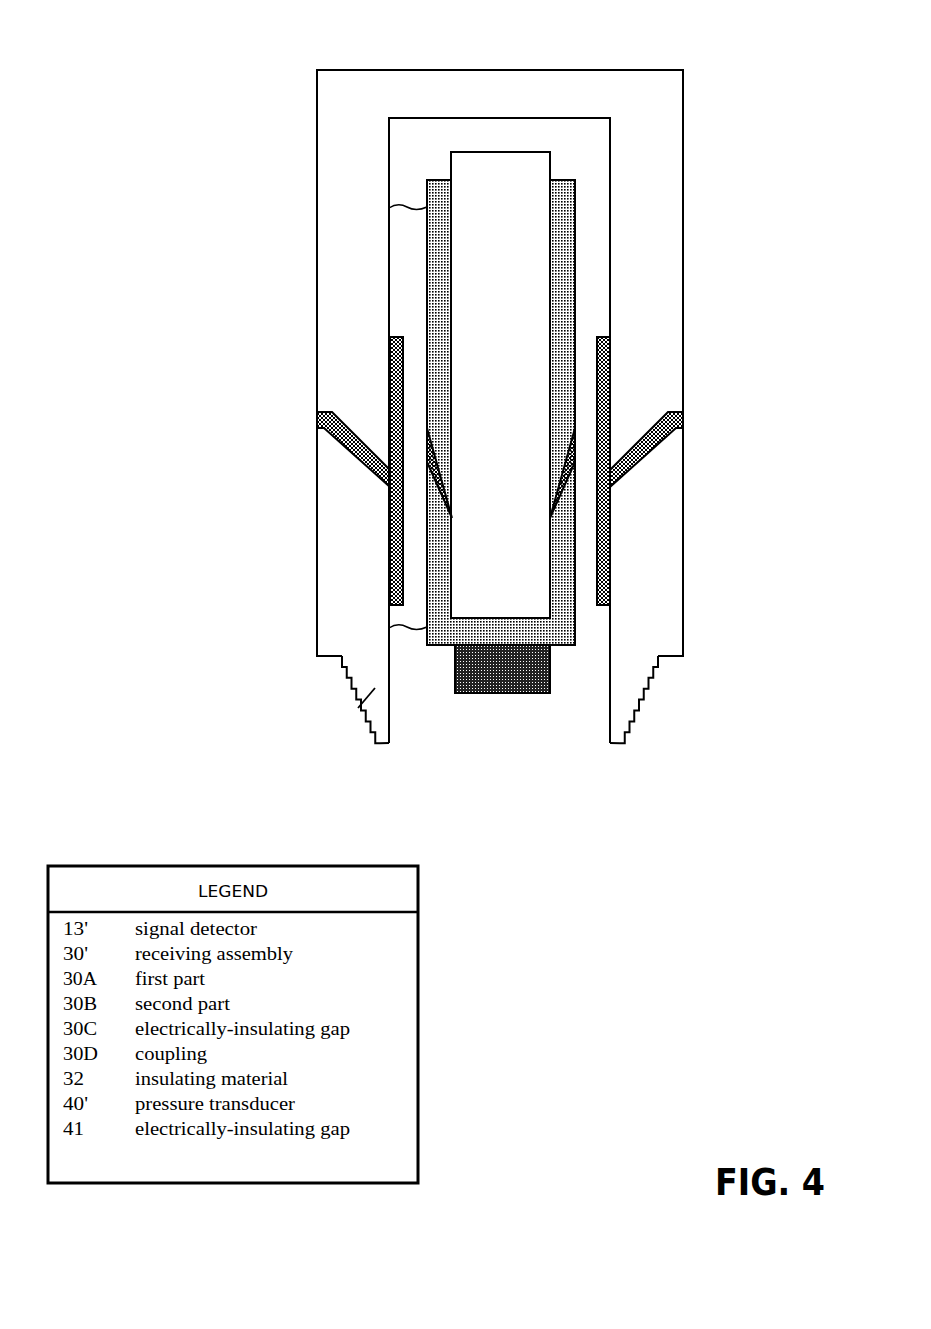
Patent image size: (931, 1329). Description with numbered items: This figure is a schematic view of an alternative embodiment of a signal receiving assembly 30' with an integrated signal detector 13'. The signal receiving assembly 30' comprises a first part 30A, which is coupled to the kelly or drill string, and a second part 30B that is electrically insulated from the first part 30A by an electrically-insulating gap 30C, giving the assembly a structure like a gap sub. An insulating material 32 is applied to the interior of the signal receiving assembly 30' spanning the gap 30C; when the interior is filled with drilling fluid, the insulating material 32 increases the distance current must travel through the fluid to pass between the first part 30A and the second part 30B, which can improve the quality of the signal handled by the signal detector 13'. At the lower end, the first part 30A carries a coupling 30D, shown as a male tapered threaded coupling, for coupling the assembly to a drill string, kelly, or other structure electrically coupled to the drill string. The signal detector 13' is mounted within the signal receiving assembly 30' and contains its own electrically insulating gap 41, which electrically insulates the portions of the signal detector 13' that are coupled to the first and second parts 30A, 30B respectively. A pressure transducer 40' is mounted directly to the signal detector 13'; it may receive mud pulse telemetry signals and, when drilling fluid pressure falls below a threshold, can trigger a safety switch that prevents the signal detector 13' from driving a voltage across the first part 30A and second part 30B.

The signal detector 13' is at (475, 398).
The signal receiving assembly 30' is at (438, 380).
The first part 30A is at (352, 565).
The second part 30B is at (347, 268).
The electrically-insulating gap 30C is at (344, 440).
The coupling 30D is at (375, 688).
The insulating material 32 is at (397, 390).
The pressure transducer 40' is at (536, 724).
The electrically insulating gap 41 is at (558, 497).